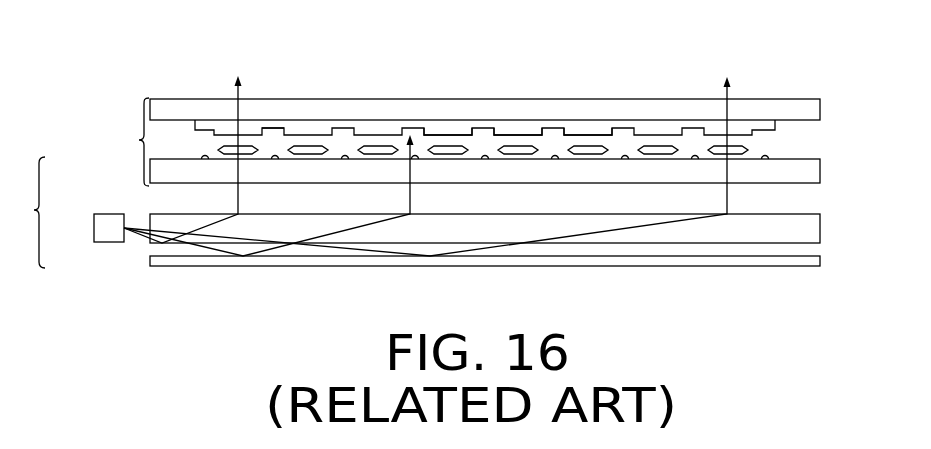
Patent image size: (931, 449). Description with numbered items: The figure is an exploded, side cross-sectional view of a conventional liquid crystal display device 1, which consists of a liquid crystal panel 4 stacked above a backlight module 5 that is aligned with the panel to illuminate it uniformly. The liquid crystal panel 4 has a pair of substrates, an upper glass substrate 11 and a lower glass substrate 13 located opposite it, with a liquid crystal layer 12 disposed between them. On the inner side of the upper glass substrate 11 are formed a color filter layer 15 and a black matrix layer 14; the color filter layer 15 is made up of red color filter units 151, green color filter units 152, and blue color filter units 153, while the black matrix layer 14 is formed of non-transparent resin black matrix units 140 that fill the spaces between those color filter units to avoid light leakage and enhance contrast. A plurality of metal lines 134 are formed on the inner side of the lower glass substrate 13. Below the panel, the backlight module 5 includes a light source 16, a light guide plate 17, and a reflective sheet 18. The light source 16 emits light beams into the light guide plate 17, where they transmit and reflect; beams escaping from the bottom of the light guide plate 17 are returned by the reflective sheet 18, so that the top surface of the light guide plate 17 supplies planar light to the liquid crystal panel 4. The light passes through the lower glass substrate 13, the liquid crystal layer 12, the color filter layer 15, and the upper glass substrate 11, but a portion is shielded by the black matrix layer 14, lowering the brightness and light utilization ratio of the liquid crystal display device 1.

The liquid crystal display device 1 is at (420, 28).
The liquid crystal panel 4 is at (133, 142).
The backlight module 5 is at (27, 212).
The upper glass substrate 11 is at (790, 110).
The liquid crystal layer 12 is at (745, 150).
The lower glass substrate 13 is at (803, 178).
The black matrix layer 14 is at (695, 128).
The color filter layer 15 is at (790, 127).
The light source 16 is at (108, 228).
The light guide plate 17 is at (170, 222).
The reflective sheet 18 is at (150, 260).
The metal lines 134 is at (625, 156).
The black matrix units 140 is at (345, 123).
The red color filter units 151 is at (452, 127).
The green color filter units 152 is at (524, 129).
The blue color filter units 153 is at (592, 128).